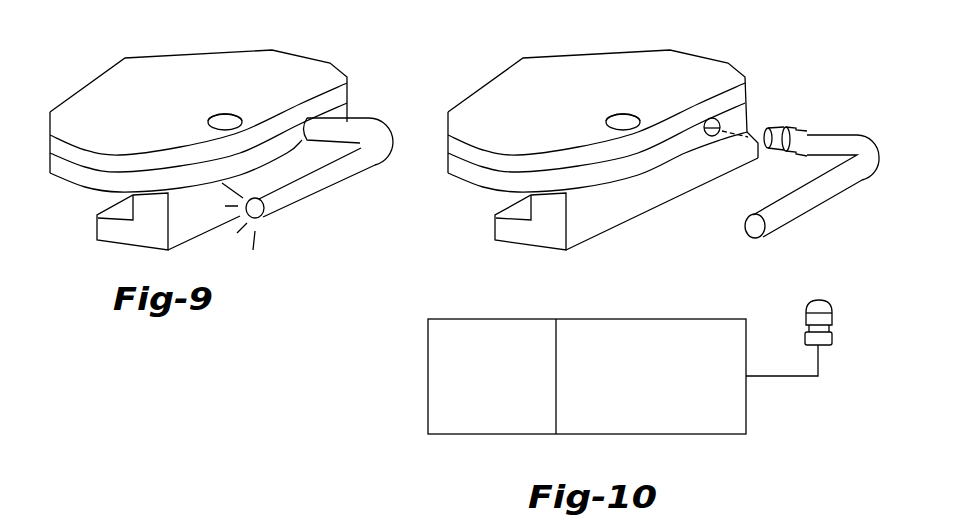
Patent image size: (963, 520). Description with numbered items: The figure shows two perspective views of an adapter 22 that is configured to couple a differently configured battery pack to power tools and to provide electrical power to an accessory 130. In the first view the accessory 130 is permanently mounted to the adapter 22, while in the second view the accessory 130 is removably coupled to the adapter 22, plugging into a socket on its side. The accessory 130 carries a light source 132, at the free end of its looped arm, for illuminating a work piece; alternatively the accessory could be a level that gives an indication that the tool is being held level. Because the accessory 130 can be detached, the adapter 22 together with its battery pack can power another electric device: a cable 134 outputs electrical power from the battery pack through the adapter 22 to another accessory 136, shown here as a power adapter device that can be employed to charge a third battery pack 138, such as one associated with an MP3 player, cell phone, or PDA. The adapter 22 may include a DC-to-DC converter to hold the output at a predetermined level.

In FIG. 9, the adapter 22 is at (106, 66).
In FIG. 10, the adapter 22 is at (506, 66).
In FIG. 9, the accessory 130 is at (357, 167).
In FIG. 10, the accessory 130 is at (808, 208).
In FIG. 9, the light source 132 is at (258, 217).
In FIG. 10, the light source 132 is at (747, 225).
In FIG. 10, the cable 134 is at (793, 377).
In FIG. 10, the another accessory 136 is at (630, 319).
In FIG. 10, the third battery pack 138 is at (427, 377).